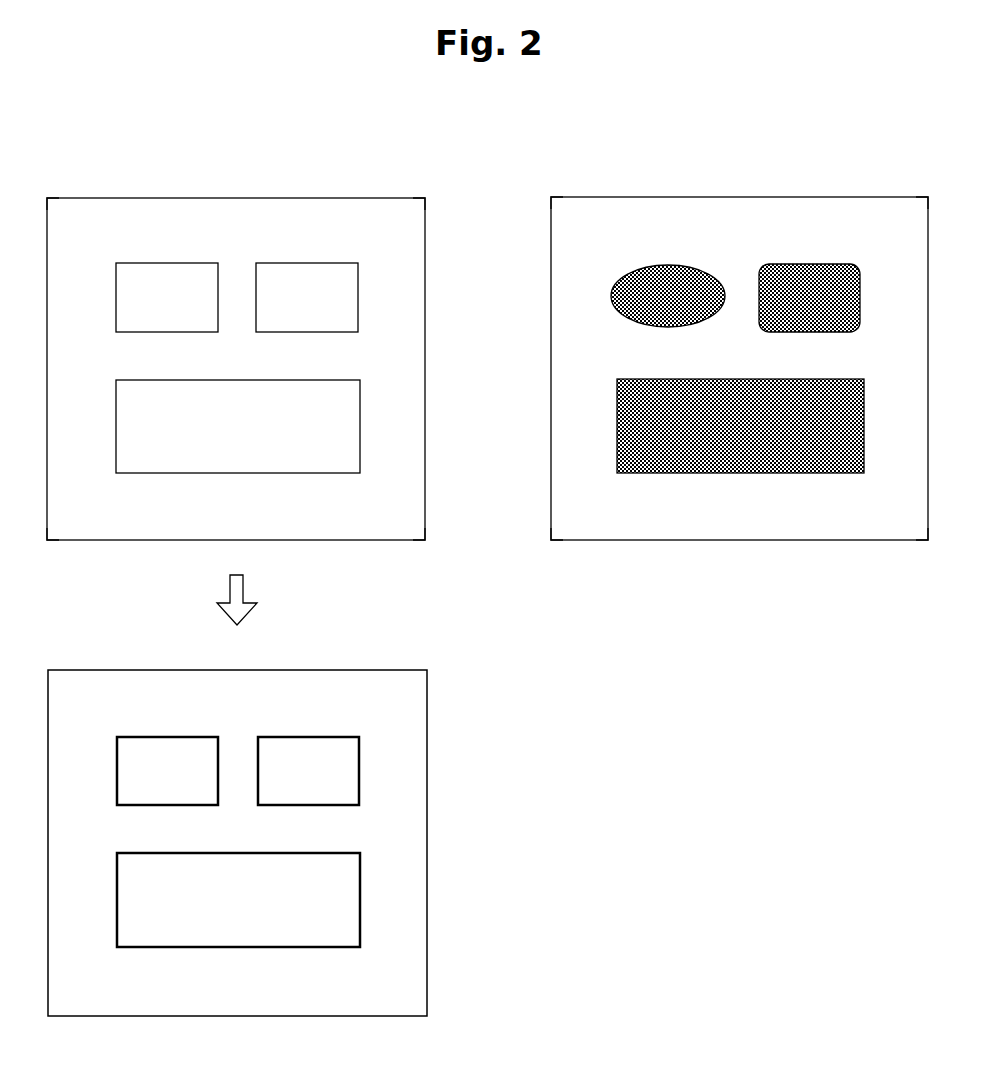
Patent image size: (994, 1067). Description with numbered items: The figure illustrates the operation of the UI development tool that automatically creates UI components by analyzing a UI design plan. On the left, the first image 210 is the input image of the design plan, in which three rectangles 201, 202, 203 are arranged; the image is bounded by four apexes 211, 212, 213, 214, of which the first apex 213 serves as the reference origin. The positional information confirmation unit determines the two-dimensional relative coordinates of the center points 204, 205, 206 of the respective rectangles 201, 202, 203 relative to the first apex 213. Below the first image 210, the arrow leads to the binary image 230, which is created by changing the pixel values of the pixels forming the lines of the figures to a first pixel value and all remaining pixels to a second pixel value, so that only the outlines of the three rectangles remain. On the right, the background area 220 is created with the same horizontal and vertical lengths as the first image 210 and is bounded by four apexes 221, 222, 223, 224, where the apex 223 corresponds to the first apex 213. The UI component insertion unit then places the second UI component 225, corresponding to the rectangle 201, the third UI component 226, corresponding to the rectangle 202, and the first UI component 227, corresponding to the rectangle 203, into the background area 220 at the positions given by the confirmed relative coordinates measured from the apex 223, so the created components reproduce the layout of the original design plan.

The rectangle 201 is at (167, 262).
The rectangle 202 is at (308, 262).
The rectangle 203 is at (237, 379).
The center point 204 is at (167, 295).
The center point 205 is at (305, 295).
The center point 206 is at (240, 437).
The image 1 210 is at (237, 196).
The apex 211 is at (47, 191).
The apex 212 is at (425, 191).
The first apex 213 is at (47, 546).
The apex 214 is at (425, 546).
The background area 220 is at (740, 195).
The apex 221 is at (552, 190).
The apex 222 is at (929, 191).
The apex 223 is at (550, 546).
The apex 224 is at (929, 546).
The UI component 2 225 is at (667, 265).
The UI component 3 226 is at (810, 263).
The UI component 1 227 is at (751, 376).
The binary image 230 is at (238, 668).